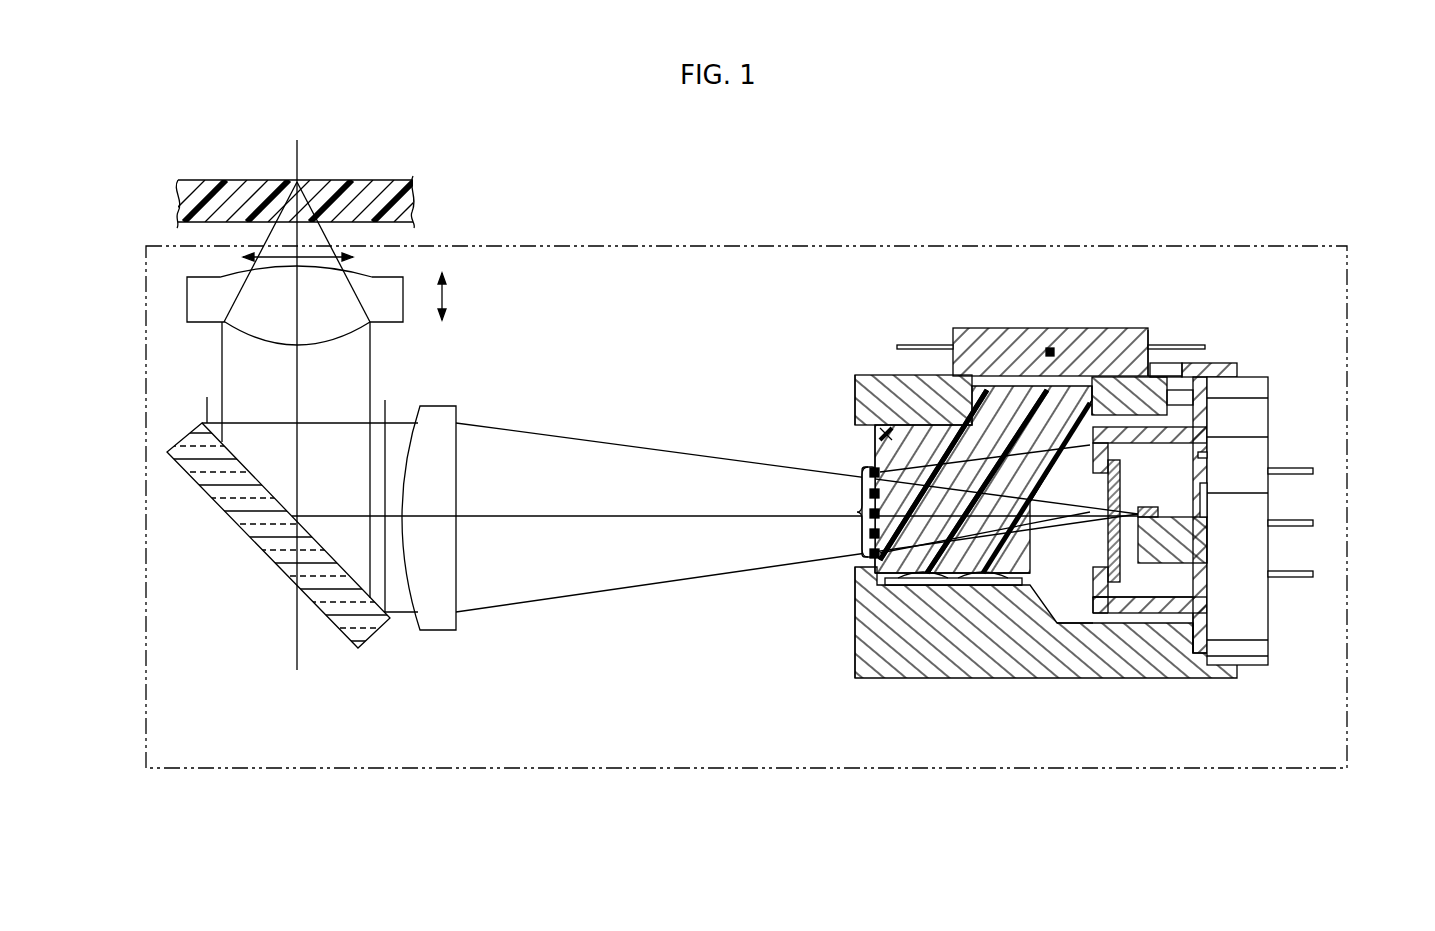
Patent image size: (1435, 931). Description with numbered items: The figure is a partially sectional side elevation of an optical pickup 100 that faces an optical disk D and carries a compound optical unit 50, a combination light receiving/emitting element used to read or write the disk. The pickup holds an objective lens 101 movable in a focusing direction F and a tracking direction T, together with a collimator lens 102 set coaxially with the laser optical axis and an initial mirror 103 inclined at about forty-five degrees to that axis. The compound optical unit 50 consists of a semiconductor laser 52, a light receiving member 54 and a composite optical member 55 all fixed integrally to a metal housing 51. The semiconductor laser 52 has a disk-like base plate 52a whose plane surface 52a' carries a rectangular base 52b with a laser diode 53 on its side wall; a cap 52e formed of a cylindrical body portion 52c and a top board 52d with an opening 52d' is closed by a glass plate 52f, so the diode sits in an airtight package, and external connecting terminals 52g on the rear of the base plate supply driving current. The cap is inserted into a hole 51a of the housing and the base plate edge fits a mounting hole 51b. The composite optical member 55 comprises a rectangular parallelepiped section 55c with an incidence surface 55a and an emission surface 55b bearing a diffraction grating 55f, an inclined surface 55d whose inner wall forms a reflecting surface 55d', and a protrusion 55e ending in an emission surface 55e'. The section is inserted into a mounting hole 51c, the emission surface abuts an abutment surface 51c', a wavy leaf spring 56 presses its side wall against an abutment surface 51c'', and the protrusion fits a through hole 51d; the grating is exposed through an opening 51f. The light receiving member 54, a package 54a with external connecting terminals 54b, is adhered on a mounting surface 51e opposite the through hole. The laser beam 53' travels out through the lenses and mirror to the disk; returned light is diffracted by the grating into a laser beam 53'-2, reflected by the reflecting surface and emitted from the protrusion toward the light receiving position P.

The optical disk D is at (363, 192).
The tracking direction T is at (325, 248).
The focusing direction F is at (448, 295).
The light receiving position P is at (1050, 348).
The optical pickup 100 is at (553, 246).
The objective lens 101 is at (400, 278).
The collimator lens 102 is at (443, 412).
The initial mirror 103 is at (253, 540).
The compound optical unit 50 is at (890, 690).
The housing 51 is at (877, 668).
The hole 51a is at (1182, 652).
The mounting hole 51b is at (1242, 663).
The mounting hole 51c is at (983, 575).
The abutment surface 51c' is at (903, 595).
The abutment surface 51c'' is at (887, 426).
The through hole 51d is at (1100, 398).
The mounting surface 51e is at (1170, 368).
The opening 51f is at (864, 449).
The semiconductor laser 52 is at (1251, 366).
The base plate 52a is at (1309, 521).
The plane surface 52a' is at (1266, 442).
The base 52b is at (1125, 648).
The cylindrical body portion 52c is at (1106, 625).
The top board 52d is at (1067, 720).
The opening 52d' is at (1058, 670).
The cap 52e is at (1023, 824).
The glass plate 52f is at (1075, 625).
The external connecting terminals 52g is at (1313, 471).
The laser diode 53 is at (1234, 523).
The laser beam 53' is at (1061, 480).
The diffracted laser beam 53'-2 is at (949, 420).
The light receiving member 54 is at (1017, 320).
The package 54a is at (1147, 336).
The external connecting terminals 54b is at (905, 345).
The composite optical member 55 is at (905, 375).
The incidence surface 55a is at (985, 588).
The emission surface 55b is at (878, 436).
The rectangular parallelepiped section 55c is at (880, 385).
The inclined surface 55d is at (1119, 517).
The reflecting surface 55d' is at (1180, 339).
The protrusion 55e is at (1119, 349).
The emission surface 55e' is at (1004, 413).
The diffraction grating 55f is at (857, 512).
The wavy leaf spring 56 is at (952, 588).